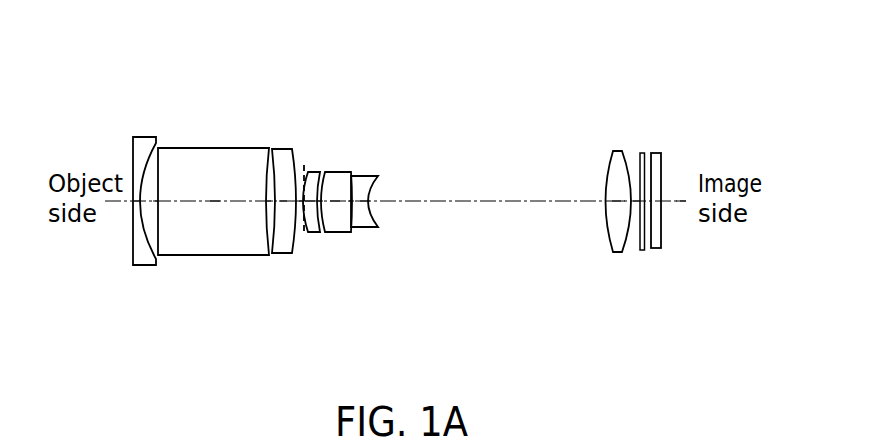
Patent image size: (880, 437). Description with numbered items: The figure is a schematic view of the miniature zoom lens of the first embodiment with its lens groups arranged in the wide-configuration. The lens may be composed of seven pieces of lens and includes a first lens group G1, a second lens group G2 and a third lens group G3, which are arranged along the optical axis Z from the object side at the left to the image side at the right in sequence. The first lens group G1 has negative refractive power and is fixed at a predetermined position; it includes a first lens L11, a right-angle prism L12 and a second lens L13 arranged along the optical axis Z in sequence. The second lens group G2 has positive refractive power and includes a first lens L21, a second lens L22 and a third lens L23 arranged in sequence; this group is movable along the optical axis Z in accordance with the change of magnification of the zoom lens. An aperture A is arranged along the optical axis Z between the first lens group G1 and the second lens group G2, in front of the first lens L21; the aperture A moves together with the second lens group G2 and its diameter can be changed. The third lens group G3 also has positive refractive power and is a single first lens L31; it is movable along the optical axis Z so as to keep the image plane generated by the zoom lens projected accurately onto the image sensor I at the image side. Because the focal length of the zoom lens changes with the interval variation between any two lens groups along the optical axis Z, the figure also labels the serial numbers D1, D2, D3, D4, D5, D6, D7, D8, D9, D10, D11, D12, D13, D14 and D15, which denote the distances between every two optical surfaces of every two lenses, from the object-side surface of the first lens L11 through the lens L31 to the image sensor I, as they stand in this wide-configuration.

The first lens group G1 is at (262, 44).
The second lens group G2 is at (392, 108).
The third lens group G3 is at (633, 97).
The first lens L11 is at (145, 160).
The right-angle prism L12 is at (237, 160).
The second lens L13 is at (286, 152).
The first lens L21 is at (312, 172).
The second lens L22 is at (342, 172).
The third lens L23 is at (363, 176).
The first lens L31 is at (618, 151).
The aperture A is at (304, 157).
The image sensor I is at (658, 160).
The optical axis Z is at (683, 195).
The distance D1 is at (137, 205).
The distance D2 is at (155, 205).
The distance D3 is at (215, 205).
The distance D4 is at (269, 205).
The distance D5 is at (283, 205).
The distance D6 is at (299, 205).
The distance D7 is at (305, 205).
The distance D8 is at (311, 205).
The distance D9 is at (320, 205).
The distance D10 is at (335, 205).
The distance D11 is at (351, 205).
The distance D12 is at (365, 205).
The distance D13 is at (513, 205).
The distance D14 is at (618, 205).
The distance D15 is at (637, 207).